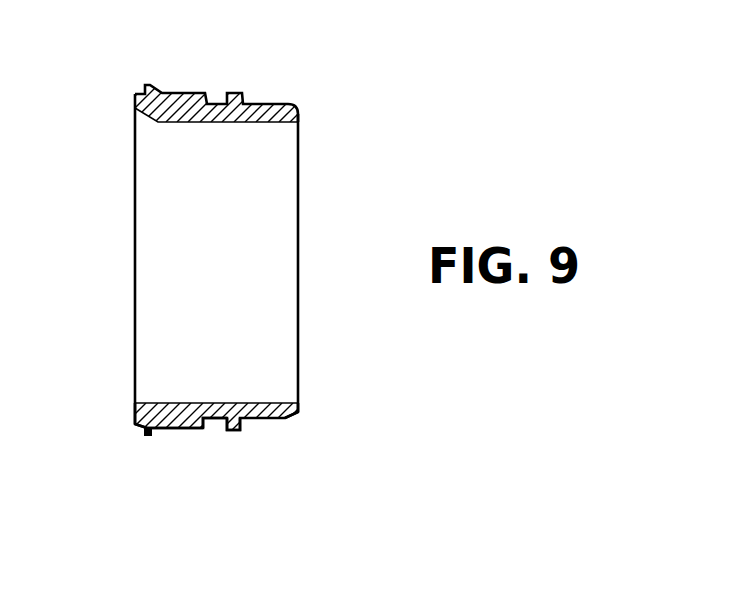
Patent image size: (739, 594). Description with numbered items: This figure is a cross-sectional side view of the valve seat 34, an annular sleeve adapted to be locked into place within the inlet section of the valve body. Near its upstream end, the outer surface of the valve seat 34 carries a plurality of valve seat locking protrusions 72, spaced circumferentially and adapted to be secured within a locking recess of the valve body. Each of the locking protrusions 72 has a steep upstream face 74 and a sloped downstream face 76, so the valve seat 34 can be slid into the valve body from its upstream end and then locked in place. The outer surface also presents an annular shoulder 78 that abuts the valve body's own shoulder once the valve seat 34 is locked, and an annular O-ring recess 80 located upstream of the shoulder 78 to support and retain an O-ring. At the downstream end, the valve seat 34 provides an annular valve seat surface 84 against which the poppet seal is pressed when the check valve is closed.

The valve seat 34 is at (326, 52).
The valve seat locking protrusions 72 is at (146, 427).
The steep upstream face 74 is at (140, 435).
The sloped downstream face 76 is at (149, 433).
The annular shoulder 78 is at (243, 422).
The annular O-ring recess 80 is at (213, 418).
The annular valve seat surface 84 is at (299, 414).